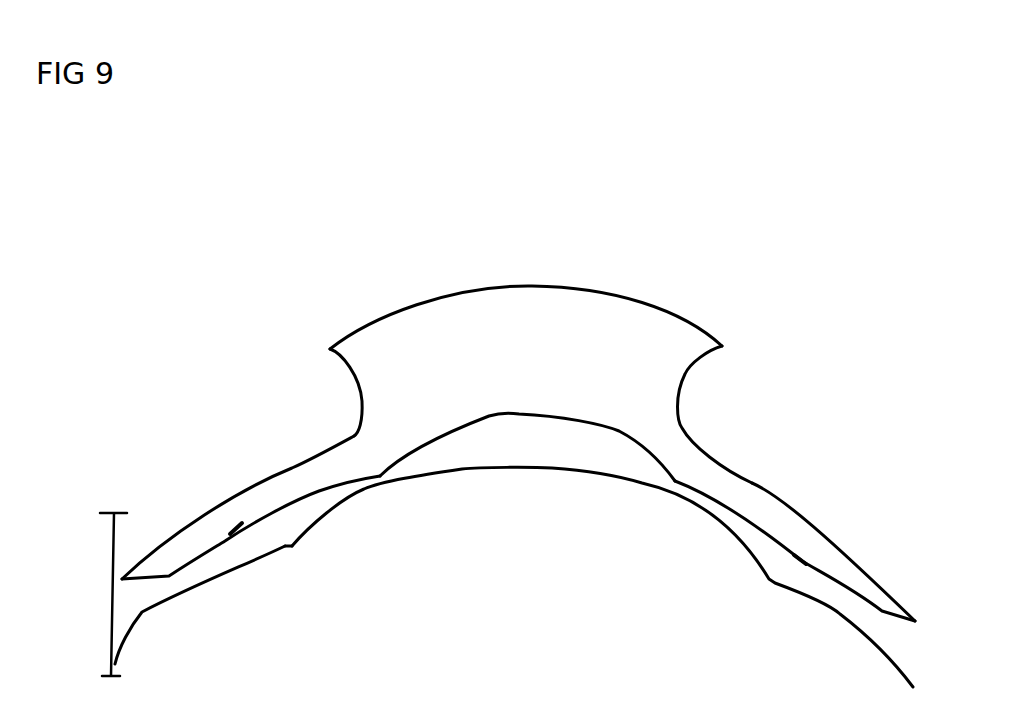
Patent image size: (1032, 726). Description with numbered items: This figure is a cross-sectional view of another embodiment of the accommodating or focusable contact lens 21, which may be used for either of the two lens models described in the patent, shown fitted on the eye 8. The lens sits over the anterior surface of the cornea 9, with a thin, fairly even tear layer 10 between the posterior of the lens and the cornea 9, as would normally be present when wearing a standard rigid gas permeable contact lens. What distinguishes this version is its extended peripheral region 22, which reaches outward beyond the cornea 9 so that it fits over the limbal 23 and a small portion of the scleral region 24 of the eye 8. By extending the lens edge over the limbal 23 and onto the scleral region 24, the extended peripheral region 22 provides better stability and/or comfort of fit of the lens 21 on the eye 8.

The accommodating or focusable contact lens 21 is at (565, 205).
The extended peripheral region 22 is at (176, 502).
The tear layer 10 is at (527, 447).
The cornea 9 is at (602, 577).
The scleral region 24 is at (200, 605).
The limbal 23 is at (300, 550).
The eye 8 is at (105, 594).